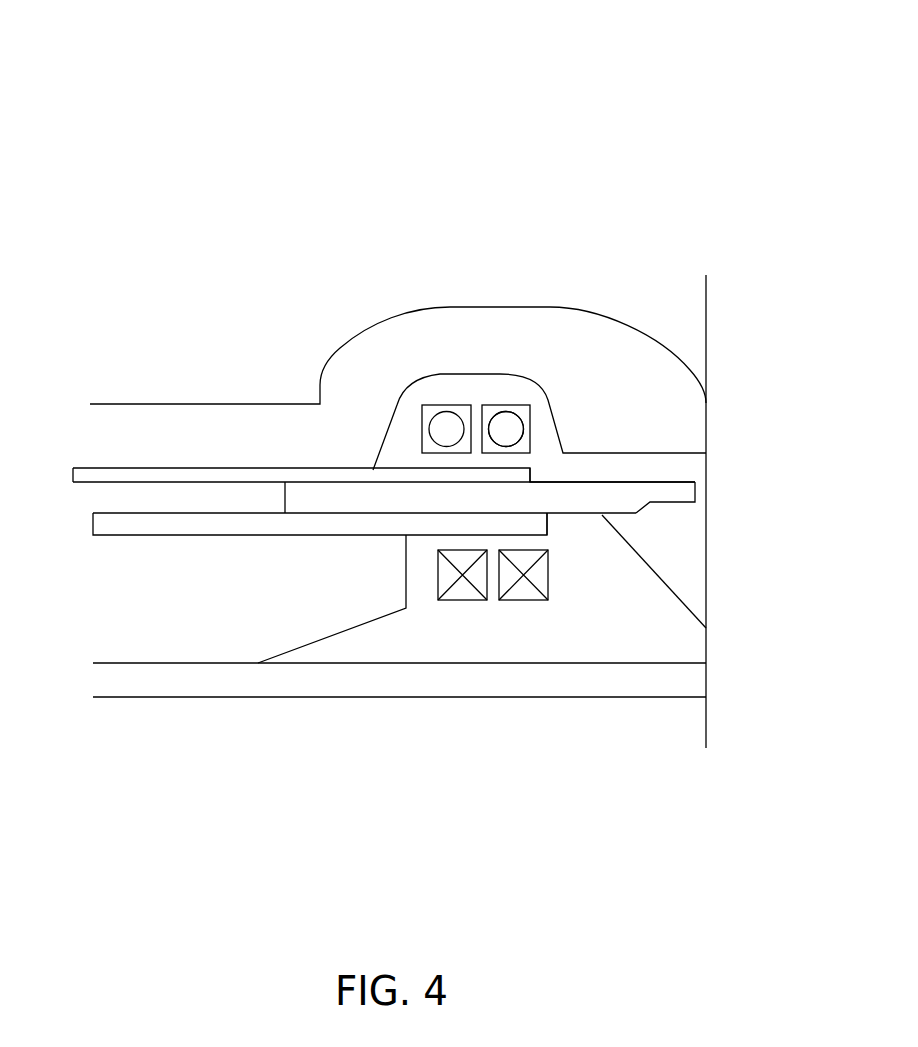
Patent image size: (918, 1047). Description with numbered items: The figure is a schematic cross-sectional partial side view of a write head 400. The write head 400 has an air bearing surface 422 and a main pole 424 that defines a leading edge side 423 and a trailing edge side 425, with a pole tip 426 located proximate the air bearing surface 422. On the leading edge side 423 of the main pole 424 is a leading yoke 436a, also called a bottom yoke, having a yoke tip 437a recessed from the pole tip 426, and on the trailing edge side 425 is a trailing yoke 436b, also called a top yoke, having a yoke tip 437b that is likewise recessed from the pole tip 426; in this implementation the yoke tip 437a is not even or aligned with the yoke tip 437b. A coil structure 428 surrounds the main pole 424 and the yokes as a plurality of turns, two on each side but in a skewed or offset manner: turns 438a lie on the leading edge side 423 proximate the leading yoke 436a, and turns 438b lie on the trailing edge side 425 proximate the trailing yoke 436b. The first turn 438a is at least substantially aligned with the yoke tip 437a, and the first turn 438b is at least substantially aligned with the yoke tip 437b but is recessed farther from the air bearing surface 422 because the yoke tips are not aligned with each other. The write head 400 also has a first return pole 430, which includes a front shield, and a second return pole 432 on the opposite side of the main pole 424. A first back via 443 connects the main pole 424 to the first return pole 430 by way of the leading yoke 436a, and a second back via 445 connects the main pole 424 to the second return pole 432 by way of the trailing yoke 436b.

The write head 400 is at (133, 128).
The air bearing surface 422 is at (706, 535).
The leading edge side 423 is at (433, 518).
The main pole 424 is at (706, 628).
The trailing edge side 425 is at (289, 480).
The pole tip 426 is at (697, 486).
The coil structure 428 is at (520, 403).
The first return pole 430 is at (167, 691).
The second return pole 432 is at (231, 443).
The leading yoke 436a is at (147, 537).
The trailing yoke 436b is at (163, 468).
The yoke tip 437a is at (550, 520).
The yoke tip 437b is at (533, 477).
The turns 438a is at (477, 600).
The turns 438b is at (495, 405).
The first back via 443 is at (406, 568).
The second back via 445 is at (387, 430).